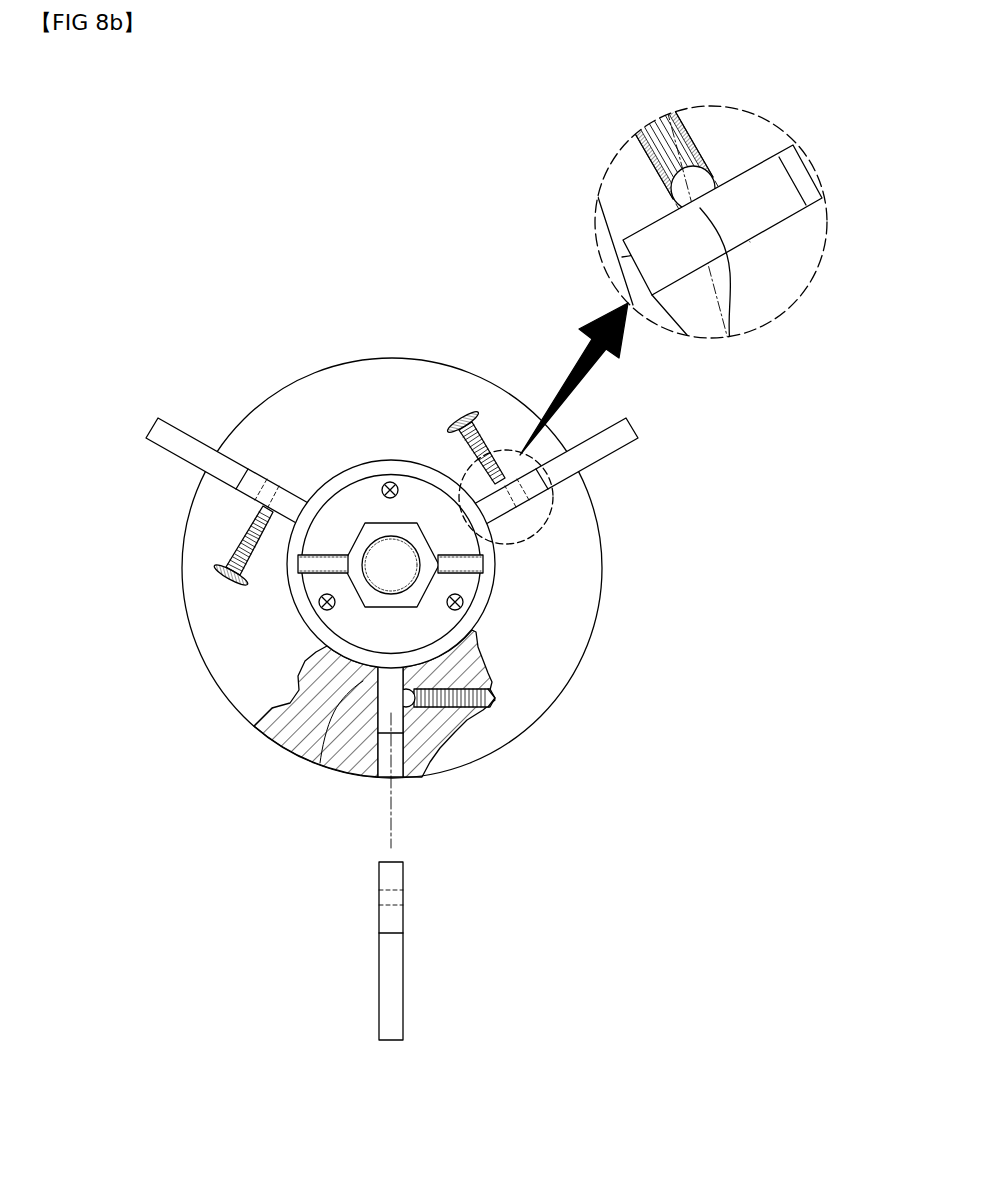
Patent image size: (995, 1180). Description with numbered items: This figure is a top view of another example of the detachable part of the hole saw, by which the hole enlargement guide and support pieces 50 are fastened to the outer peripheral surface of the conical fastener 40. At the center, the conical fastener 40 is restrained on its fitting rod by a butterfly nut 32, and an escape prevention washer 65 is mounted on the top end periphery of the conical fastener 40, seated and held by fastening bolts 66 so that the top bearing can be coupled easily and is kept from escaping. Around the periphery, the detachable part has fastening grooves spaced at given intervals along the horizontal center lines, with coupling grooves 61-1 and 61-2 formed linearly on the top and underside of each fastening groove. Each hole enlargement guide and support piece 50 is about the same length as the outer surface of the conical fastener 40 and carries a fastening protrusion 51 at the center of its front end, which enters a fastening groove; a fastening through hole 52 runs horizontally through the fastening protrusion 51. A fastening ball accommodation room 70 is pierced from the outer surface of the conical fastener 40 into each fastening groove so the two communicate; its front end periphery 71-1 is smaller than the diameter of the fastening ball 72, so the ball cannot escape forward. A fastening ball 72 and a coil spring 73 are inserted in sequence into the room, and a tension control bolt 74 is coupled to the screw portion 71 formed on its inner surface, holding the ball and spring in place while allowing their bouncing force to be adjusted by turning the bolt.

The butterfly nut 32 is at (368, 593).
The conical fastener 40 is at (315, 400).
The hole enlargement guide and support piece 50 is at (481, 592).
The fastening protrusion 51 is at (731, 350).
The fastening through hole 52 is at (287, 487).
The coupling groove 61-1 is at (364, 683).
The coupling groove 61-2 is at (380, 753).
The escape prevention washer 65 is at (363, 505).
The fastening bolt 66 is at (392, 483).
The fastening ball accommodation room 70 is at (447, 449).
The screw portion 71 is at (448, 449).
The front end periphery 71-1 is at (622, 247).
The fastening ball 72 is at (262, 512).
The coil spring 73 is at (240, 523).
The tension control bolt 74 is at (230, 549).